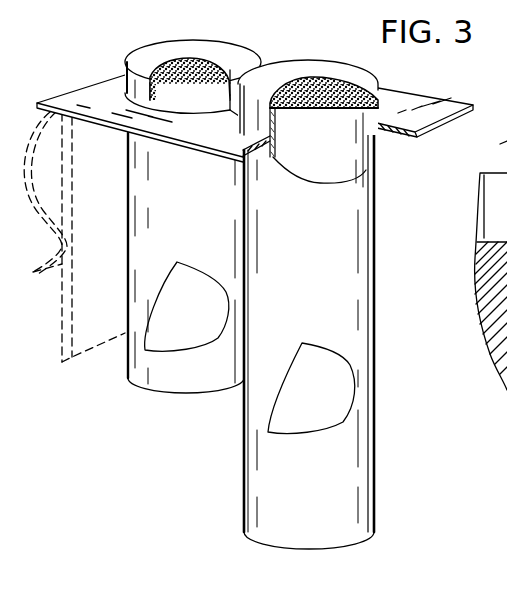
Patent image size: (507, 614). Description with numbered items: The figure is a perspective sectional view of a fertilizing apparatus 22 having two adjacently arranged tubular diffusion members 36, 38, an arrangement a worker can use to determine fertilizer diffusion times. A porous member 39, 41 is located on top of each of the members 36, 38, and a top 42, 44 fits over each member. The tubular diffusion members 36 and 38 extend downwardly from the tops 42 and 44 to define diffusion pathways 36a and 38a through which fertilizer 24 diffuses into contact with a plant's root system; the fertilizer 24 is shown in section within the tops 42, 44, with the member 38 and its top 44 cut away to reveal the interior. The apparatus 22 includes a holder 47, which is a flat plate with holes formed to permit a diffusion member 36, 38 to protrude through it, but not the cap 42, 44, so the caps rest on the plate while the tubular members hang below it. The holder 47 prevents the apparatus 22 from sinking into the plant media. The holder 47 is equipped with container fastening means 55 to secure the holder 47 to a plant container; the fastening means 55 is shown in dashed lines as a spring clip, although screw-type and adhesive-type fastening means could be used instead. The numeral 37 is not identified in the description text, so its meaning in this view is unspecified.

The fertilizing apparatus 22 is at (262, 301).
The fertilizer 24 is at (225, 64).
The tubular diffusion member 36 is at (186, 279).
The diffusion pathway 36a is at (220, 318).
The lower end of first tube 37 is at (167, 396).
The tubular diffusion member 38 is at (276, 343).
The diffusion pathway 38a is at (338, 407).
The porous member 39 is at (267, 547).
The porous member 41 is at (330, 112).
The top 42 is at (197, 47).
The top 44 is at (337, 97).
The holder 47 is at (97, 90).
The container fastening means 55 is at (72, 273).